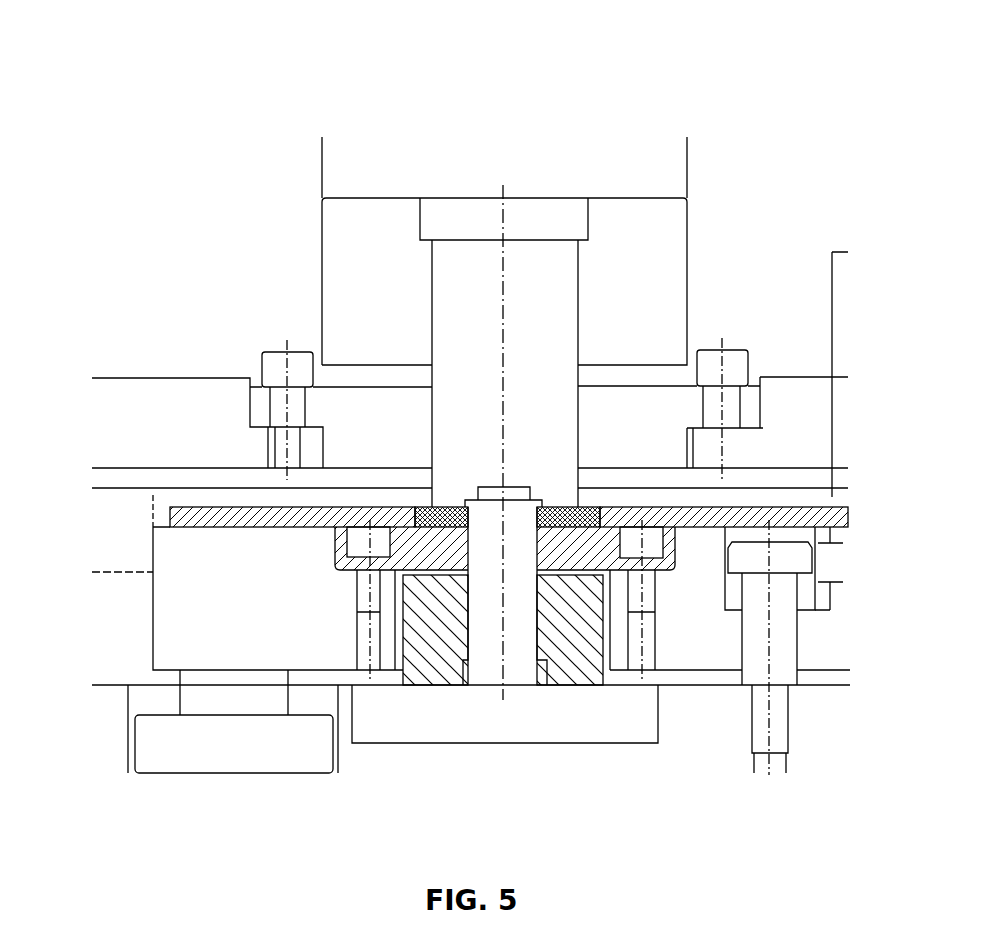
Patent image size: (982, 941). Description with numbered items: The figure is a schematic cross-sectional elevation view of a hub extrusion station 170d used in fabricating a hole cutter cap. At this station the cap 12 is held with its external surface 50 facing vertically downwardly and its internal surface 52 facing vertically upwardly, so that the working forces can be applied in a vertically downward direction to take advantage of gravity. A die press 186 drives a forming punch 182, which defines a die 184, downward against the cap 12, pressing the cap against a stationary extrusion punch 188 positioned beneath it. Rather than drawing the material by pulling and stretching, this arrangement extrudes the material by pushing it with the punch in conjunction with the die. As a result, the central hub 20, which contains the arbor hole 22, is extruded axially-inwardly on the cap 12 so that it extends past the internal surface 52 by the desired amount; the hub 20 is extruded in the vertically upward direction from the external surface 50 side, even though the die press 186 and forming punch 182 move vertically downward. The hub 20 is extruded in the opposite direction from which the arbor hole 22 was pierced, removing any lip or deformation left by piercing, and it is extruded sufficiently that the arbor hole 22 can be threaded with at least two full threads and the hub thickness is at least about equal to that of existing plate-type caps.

The extrusion station 170d is at (472, 110).
The die press 186 is at (373, 213).
The die 184 is at (488, 300).
The forming punch 182 is at (327, 398).
The internal surface 52 is at (735, 505).
The cap 12 is at (170, 515).
The external surface 50 is at (192, 527).
The central hub 20 is at (417, 505).
The extrusion punch 188 is at (490, 638).
The arbor hole 22 is at (537, 515).